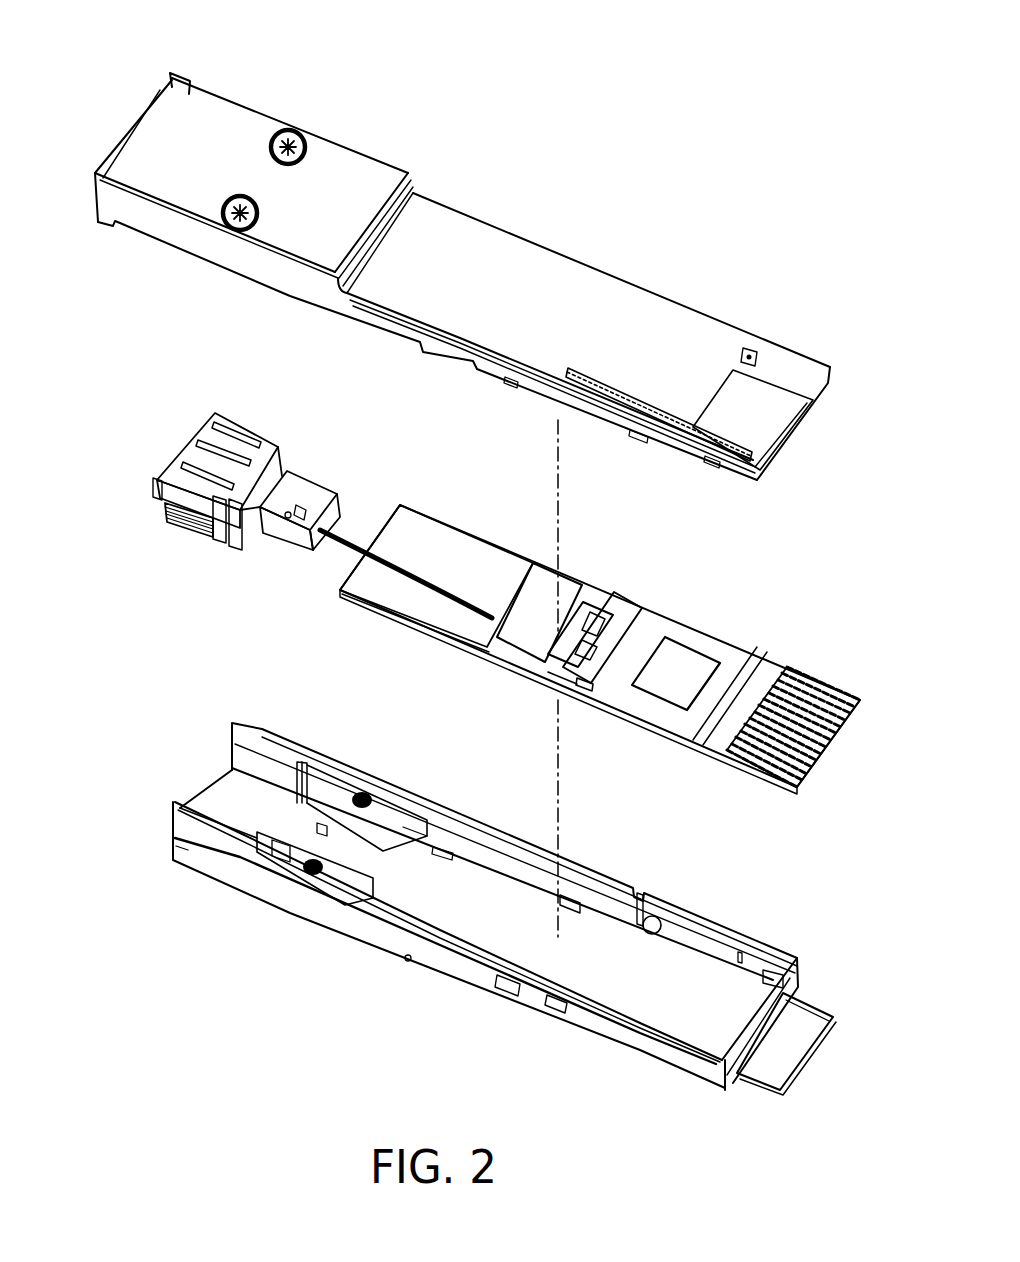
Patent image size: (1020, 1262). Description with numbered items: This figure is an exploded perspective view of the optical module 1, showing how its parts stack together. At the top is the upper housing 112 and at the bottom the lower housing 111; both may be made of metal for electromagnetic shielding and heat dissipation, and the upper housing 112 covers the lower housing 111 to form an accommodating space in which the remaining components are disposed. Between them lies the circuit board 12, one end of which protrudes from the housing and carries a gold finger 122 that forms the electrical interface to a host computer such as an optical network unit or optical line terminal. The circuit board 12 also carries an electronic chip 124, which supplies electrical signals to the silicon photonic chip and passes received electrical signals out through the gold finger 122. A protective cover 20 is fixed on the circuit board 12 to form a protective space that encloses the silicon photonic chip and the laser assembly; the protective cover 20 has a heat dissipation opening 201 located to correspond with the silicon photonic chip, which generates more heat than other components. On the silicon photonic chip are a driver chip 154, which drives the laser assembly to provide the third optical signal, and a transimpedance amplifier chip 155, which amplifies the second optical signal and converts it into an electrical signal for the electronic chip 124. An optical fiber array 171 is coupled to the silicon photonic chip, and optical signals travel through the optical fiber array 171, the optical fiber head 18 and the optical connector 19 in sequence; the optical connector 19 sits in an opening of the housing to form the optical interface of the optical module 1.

The optical module 1 is at (53, 27).
The upper housing 112 is at (356, 178).
The lower housing 111 is at (307, 907).
The circuit board 12 is at (672, 622).
The gold finger 122 is at (807, 677).
The electronic chip 124 is at (697, 663).
The driver chip 154 is at (590, 622).
The transimpedance amplifier chip 155 is at (550, 687).
The protective cover 20 is at (520, 623).
The heat dissipation opening 201 is at (565, 622).
The optical fiber array 171 is at (390, 567).
The optical fiber head 18 is at (318, 492).
The optical connector 19 is at (182, 528).